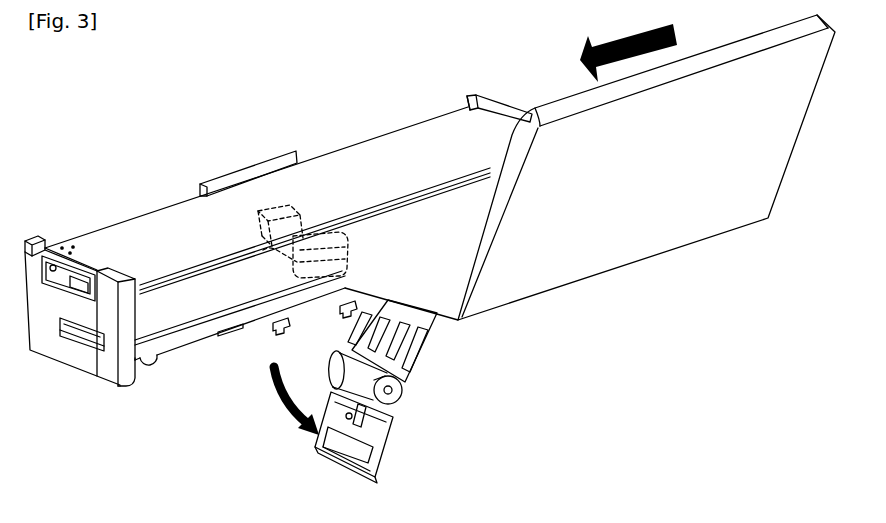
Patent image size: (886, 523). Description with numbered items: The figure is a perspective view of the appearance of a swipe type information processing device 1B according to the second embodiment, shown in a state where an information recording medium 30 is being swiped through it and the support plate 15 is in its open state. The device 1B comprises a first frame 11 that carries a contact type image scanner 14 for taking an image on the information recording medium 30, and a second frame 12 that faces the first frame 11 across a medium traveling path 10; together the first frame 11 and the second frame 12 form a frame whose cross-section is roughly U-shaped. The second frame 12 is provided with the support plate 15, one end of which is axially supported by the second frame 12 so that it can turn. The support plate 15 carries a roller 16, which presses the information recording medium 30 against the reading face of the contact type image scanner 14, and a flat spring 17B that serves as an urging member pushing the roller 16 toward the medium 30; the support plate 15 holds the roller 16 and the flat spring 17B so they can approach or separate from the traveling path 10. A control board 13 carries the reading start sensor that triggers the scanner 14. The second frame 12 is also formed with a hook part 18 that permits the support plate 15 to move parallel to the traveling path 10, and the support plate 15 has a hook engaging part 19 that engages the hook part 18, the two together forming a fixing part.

The information processing device 1B is at (136, 154).
The medium traveling path 10 is at (103, 338).
The first frame 11 is at (182, 308).
The second frame 12 is at (215, 343).
The control board 13 is at (108, 248).
The contact type image scanner 14 is at (318, 228).
The support plate 15 is at (385, 428).
The roller 16 is at (353, 378).
The flat spring 17B is at (415, 333).
The hook part 18 is at (278, 333).
The hook engaging part 19 is at (378, 472).
The information recording medium 30 is at (640, 218).